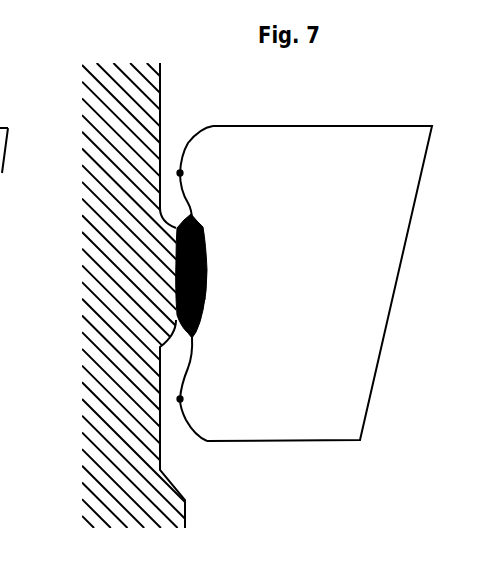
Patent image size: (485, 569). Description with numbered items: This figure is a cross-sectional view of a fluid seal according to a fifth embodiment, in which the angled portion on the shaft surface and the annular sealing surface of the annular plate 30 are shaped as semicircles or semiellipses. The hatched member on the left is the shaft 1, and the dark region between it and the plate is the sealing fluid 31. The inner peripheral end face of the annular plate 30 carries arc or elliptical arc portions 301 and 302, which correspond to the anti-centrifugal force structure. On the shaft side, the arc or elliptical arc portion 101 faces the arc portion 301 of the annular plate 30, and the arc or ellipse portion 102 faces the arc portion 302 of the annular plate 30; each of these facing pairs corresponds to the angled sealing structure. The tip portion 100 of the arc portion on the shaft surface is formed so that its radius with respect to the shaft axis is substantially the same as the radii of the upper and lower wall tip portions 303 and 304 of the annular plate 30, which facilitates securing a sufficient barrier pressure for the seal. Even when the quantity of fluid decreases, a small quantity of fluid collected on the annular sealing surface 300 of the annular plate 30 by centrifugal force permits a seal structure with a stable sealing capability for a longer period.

The wall 1 is at (85, 125).
The annular plate 30 is at (350, 163).
The annular sealing surface 300 is at (205, 280).
The arc portion 301 is at (201, 229).
The arc portion 302 is at (200, 320).
The upper wall tip portion 303 is at (182, 160).
The lower wall tip portion 304 is at (181, 402).
The sealing mass 31 is at (178, 305).
The tip portion 100 is at (178, 288).
The arc portion 101 is at (178, 236).
The arc portion 102 is at (180, 325).